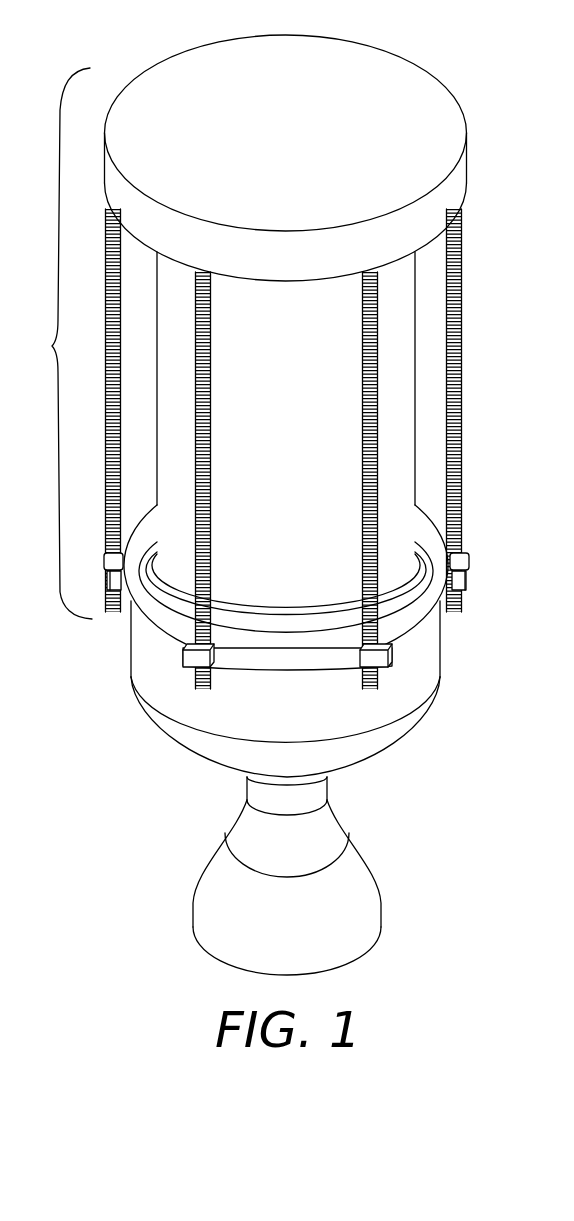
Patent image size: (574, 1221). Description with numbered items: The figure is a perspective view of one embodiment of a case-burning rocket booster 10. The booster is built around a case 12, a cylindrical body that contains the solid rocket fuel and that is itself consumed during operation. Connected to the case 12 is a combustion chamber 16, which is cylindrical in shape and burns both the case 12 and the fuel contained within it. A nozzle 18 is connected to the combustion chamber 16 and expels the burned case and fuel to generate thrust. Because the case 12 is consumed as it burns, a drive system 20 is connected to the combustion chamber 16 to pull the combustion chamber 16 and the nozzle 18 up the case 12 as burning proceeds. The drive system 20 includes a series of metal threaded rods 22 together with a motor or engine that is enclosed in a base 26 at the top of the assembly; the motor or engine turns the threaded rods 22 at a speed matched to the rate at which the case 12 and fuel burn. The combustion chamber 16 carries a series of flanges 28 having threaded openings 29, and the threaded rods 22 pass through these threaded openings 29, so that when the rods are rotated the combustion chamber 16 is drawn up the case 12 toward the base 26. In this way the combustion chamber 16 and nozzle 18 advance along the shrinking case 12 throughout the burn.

The case-burning rocket booster 10 is at (478, 75).
The case 12 is at (313, 463).
The combustion chamber 16 is at (443, 651).
The nozzle 18 is at (372, 866).
The drive system 20 is at (59, 343).
The threaded rods 22 is at (463, 423).
The base 26 is at (300, 150).
The flanges 28 is at (468, 567).
The threaded openings 29 is at (183, 654).